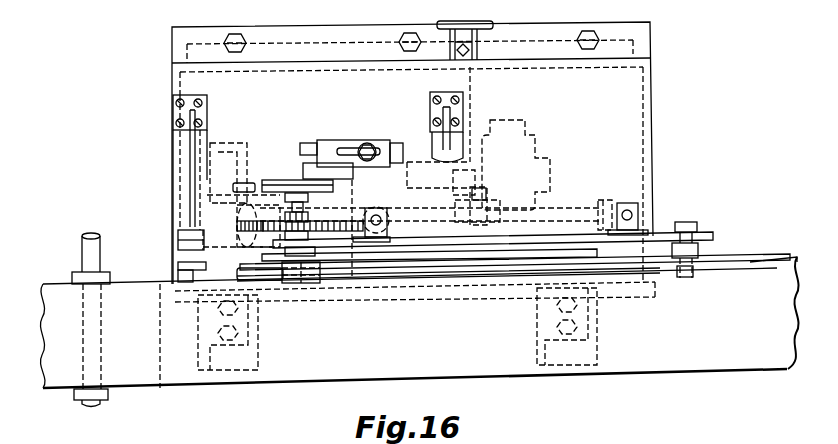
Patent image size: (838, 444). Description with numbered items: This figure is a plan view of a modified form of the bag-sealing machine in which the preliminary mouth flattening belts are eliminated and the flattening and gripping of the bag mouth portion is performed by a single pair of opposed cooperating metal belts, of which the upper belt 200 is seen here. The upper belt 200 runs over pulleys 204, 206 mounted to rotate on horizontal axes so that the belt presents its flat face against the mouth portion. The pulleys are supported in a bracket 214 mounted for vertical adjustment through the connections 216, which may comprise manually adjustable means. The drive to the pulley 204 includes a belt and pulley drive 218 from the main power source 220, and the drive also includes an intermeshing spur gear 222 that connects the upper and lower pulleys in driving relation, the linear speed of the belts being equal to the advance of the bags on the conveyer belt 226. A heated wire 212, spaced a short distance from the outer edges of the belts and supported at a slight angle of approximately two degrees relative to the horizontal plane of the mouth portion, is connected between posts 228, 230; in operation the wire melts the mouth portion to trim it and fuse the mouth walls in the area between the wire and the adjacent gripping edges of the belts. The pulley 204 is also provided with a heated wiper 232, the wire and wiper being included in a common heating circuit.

The upper belt 200 is at (490, 272).
The pulley 204 is at (270, 280).
The pulley 206 is at (725, 272).
The heated wire 212 is at (203, 262).
The bracket 214 is at (547, 236).
The connections 216 is at (485, 202).
The belt and pulley drive 218 is at (276, 180).
The main power source 220 is at (536, 135).
The spur gear 222 is at (236, 225).
The conveyer belt 226 is at (648, 375).
The post 228 is at (181, 170).
The post 230 is at (433, 127).
The heated wiper 232 is at (316, 285).